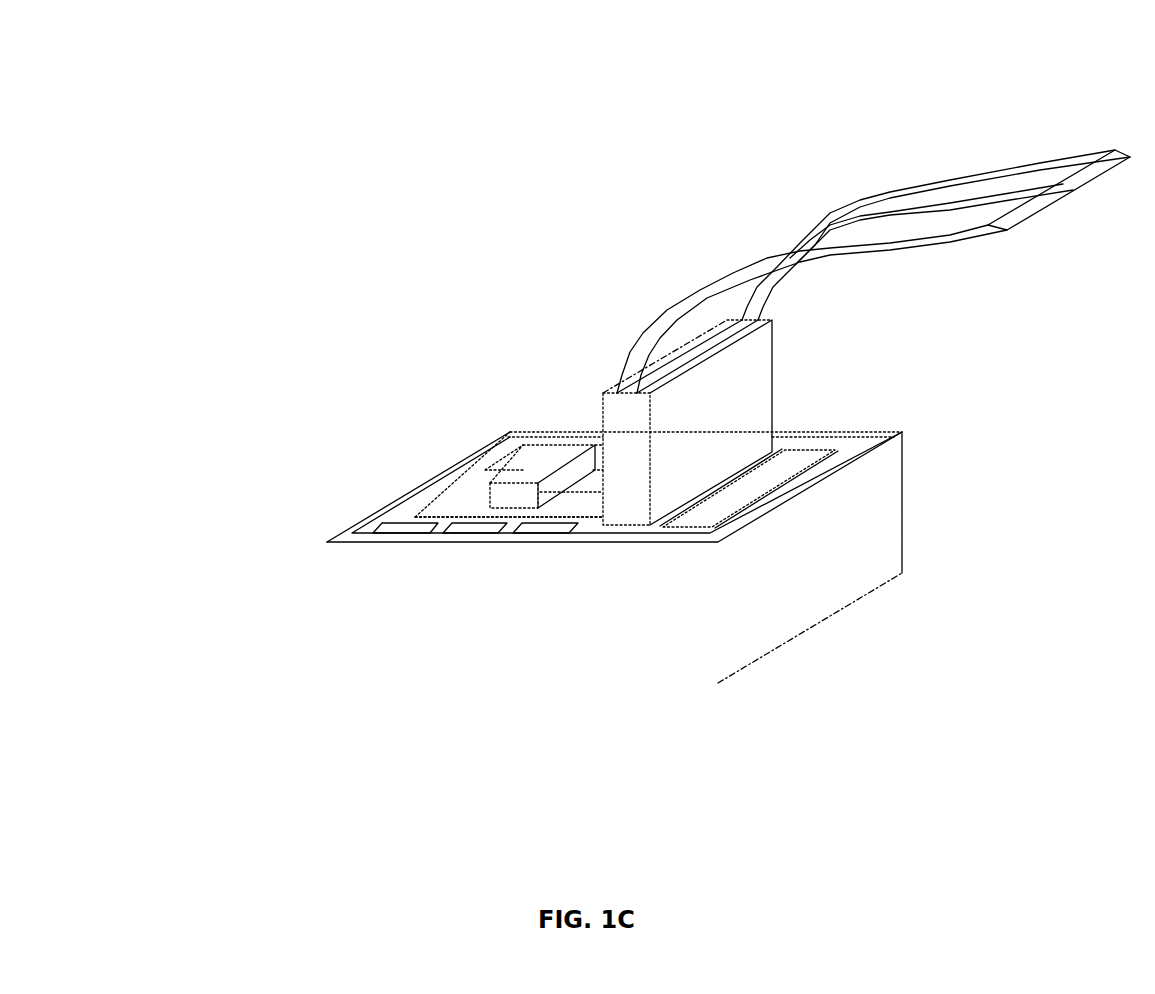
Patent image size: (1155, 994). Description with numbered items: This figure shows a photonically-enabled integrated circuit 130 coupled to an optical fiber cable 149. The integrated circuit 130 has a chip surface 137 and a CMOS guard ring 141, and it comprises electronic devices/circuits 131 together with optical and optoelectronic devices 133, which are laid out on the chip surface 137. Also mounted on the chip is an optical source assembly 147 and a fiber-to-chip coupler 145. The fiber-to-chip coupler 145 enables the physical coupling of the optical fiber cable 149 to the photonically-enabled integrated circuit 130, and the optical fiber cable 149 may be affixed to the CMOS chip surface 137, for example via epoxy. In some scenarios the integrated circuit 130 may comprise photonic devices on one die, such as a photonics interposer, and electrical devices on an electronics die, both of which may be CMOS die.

The photonically-enabled integrated circuit 130 is at (172, 91).
The electronic devices/circuits 131 is at (531, 535).
The optical and optoelectronic devices 133 is at (484, 512).
The chip surface 137 is at (465, 482).
The CMOS guard ring 141 is at (901, 432).
The fiber-to-chip coupler 145 is at (733, 435).
The optical source assembly 147 is at (551, 462).
The optical fiber cable 149 is at (933, 183).